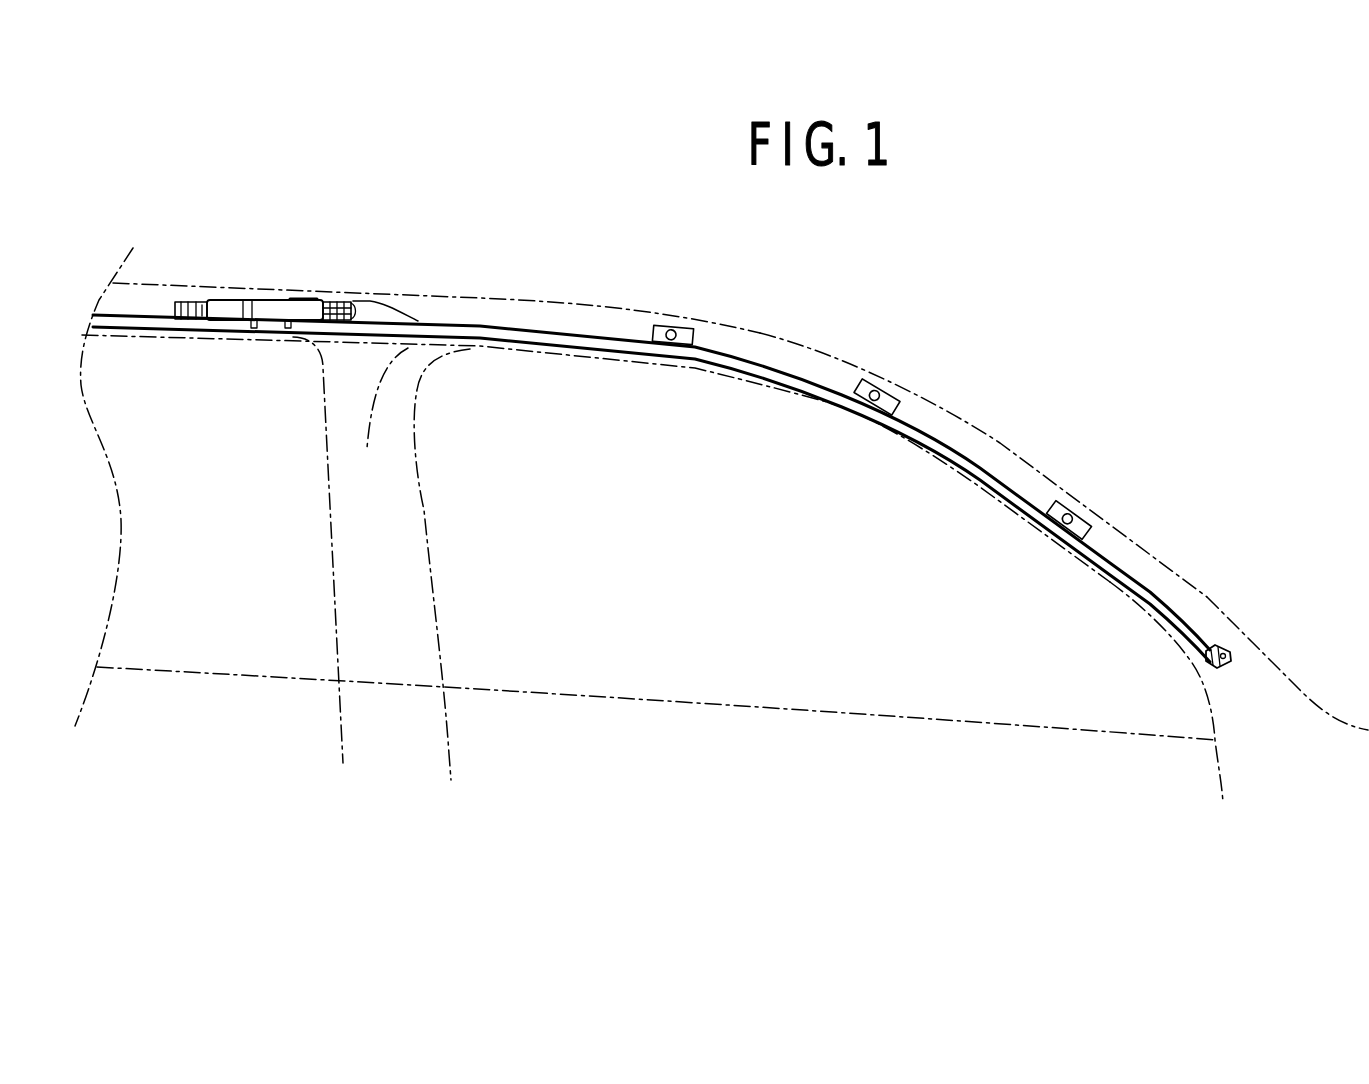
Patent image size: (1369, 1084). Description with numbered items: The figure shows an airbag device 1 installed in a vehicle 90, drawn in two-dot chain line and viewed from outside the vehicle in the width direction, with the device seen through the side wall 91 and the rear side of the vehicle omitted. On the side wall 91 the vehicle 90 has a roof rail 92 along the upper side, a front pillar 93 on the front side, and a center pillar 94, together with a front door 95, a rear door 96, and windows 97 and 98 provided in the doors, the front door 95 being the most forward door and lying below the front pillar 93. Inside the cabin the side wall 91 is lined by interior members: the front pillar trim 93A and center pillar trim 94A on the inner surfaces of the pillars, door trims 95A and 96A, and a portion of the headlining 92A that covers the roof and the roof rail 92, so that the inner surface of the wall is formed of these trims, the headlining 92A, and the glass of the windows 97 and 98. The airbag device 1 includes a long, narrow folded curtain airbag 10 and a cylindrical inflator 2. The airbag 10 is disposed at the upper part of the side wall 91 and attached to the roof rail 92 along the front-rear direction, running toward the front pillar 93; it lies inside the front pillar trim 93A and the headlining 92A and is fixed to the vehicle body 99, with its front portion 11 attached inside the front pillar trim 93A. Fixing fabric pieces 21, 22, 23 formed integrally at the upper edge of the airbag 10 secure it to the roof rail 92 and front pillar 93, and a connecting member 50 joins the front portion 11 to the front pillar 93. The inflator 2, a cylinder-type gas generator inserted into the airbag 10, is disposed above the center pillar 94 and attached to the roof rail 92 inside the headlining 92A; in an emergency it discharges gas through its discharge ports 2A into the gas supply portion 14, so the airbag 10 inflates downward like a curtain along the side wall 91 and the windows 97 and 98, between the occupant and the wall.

The airbag device 1 is at (206, 274).
The inflator 2 is at (275, 310).
The gas discharge ports 2A is at (325, 297).
The airbag 10 is at (490, 327).
The front portion 11 is at (1030, 506).
The gas supply portion 14 is at (373, 297).
The fixing fabric piece 21 is at (1087, 510).
The fixing fabric piece 22 is at (896, 388).
The fixing fabric piece 23 is at (693, 323).
The connecting member 50 is at (1225, 650).
The vehicle 90 is at (825, 322).
The side wall 91 is at (727, 443).
The roof rail 92 is at (560, 315).
The headlining 92A is at (610, 327).
The front pillar 93 is at (957, 433).
The front pillar trim 93A is at (1005, 468).
The center pillar 94 is at (408, 348).
The center pillar trim 94A is at (372, 546).
The front door 95 is at (743, 760).
The front door trim 95A is at (820, 747).
The rear door 96 is at (198, 708).
The rear door trim 96A is at (157, 705).
The window 97 is at (570, 603).
The window 98 is at (258, 590).
The vehicle body 99 is at (1243, 655).